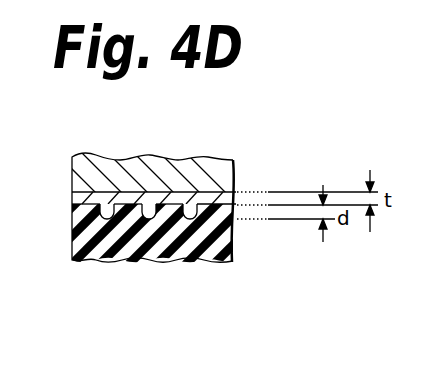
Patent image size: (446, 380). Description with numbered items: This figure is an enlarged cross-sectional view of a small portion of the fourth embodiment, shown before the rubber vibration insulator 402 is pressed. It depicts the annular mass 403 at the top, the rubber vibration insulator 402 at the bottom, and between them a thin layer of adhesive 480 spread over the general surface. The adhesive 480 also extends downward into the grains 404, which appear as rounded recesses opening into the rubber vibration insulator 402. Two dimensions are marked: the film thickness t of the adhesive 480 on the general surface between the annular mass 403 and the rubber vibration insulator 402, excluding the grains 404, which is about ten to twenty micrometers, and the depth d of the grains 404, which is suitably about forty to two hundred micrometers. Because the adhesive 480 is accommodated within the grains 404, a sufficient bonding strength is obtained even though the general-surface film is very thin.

The rubber vibration insulator 402 is at (224, 243).
The annular mass 403 is at (191, 165).
The grains 404 is at (83, 216).
The adhesive 480 is at (203, 195).